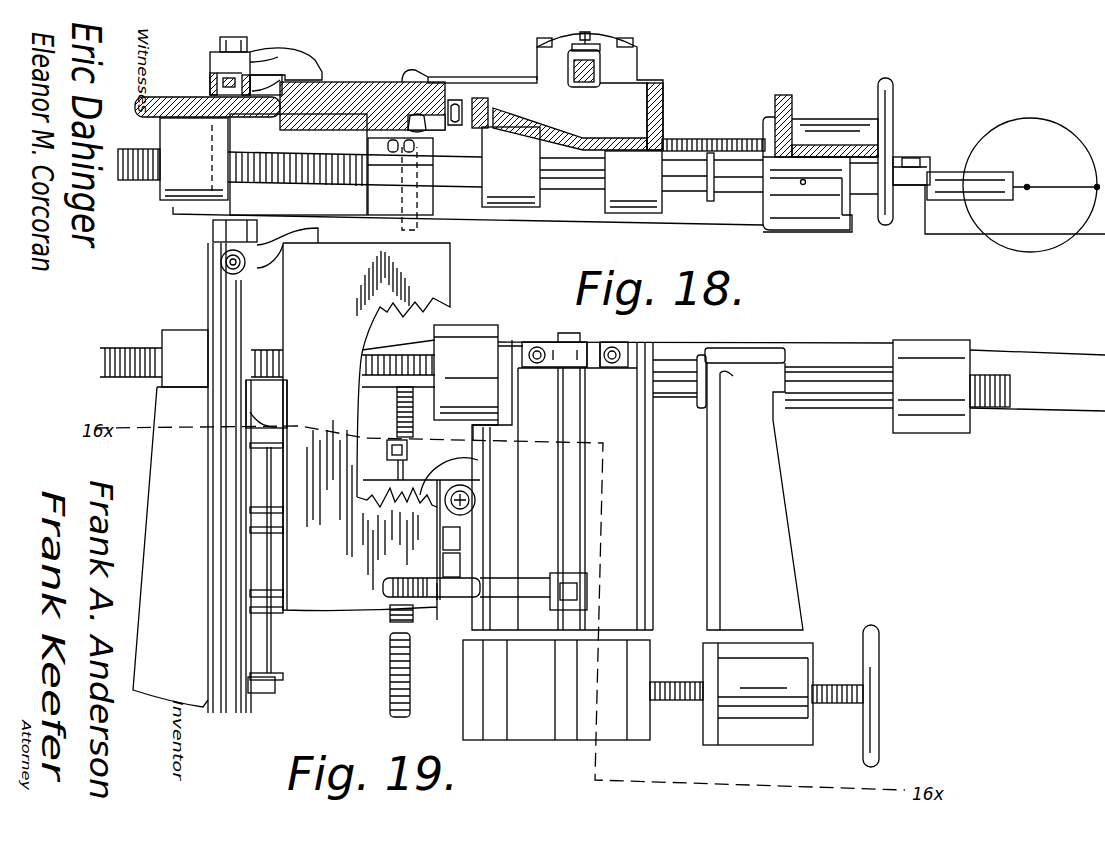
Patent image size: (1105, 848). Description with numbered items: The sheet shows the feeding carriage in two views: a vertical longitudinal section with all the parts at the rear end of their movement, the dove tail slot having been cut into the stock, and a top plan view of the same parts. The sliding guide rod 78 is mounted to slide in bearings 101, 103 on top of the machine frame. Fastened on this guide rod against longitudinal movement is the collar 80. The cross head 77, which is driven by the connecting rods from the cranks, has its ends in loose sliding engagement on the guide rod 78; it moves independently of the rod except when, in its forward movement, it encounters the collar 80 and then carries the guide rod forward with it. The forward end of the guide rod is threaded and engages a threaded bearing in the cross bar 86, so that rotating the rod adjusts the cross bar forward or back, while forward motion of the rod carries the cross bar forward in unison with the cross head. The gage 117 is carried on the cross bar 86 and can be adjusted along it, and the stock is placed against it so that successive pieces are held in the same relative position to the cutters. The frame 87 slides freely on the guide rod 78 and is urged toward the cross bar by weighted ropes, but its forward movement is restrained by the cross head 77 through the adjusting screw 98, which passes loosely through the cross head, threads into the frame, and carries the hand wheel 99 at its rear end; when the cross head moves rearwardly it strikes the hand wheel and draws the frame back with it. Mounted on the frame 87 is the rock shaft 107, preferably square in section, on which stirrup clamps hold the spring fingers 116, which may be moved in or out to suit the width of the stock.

In FIG. 18, the cross head 77 is at (812, 122).
In FIG. 19, the cross head 77 is at (790, 518).
In FIG. 18, the sliding guide rod 78 is at (138, 181).
In FIG. 19, the sliding guide rod 78 is at (100, 362).
In FIG. 18, the collar 80 is at (706, 186).
In FIG. 19, the collar 80 is at (703, 355).
In FIG. 18, the cross bar 86 is at (163, 97).
In FIG. 19, the cross bar 86 is at (152, 486).
In FIG. 18, the frame 87 is at (624, 96).
In FIG. 18, the adjusting screw 98 is at (703, 139).
In FIG. 19, the adjusting screw 98 is at (672, 682).
In FIG. 18, the hand wheel 99 is at (895, 100).
In FIG. 19, the hand wheel 99 is at (878, 655).
In FIG. 18, the bearing 101 is at (932, 172).
In FIG. 18, the bearing 103 is at (380, 183).
In FIG. 19, the bearing 103 is at (472, 338).
In FIG. 18, the rock shaft 107 is at (567, 62).
In FIG. 19, the rock shaft 107 is at (583, 418).
In FIG. 18, the spring finger 116 is at (445, 77).
In FIG. 19, the spring finger 116 is at (518, 590).
In FIG. 18, the gage 117 is at (313, 63).
In FIG. 19, the gage 117 is at (211, 247).